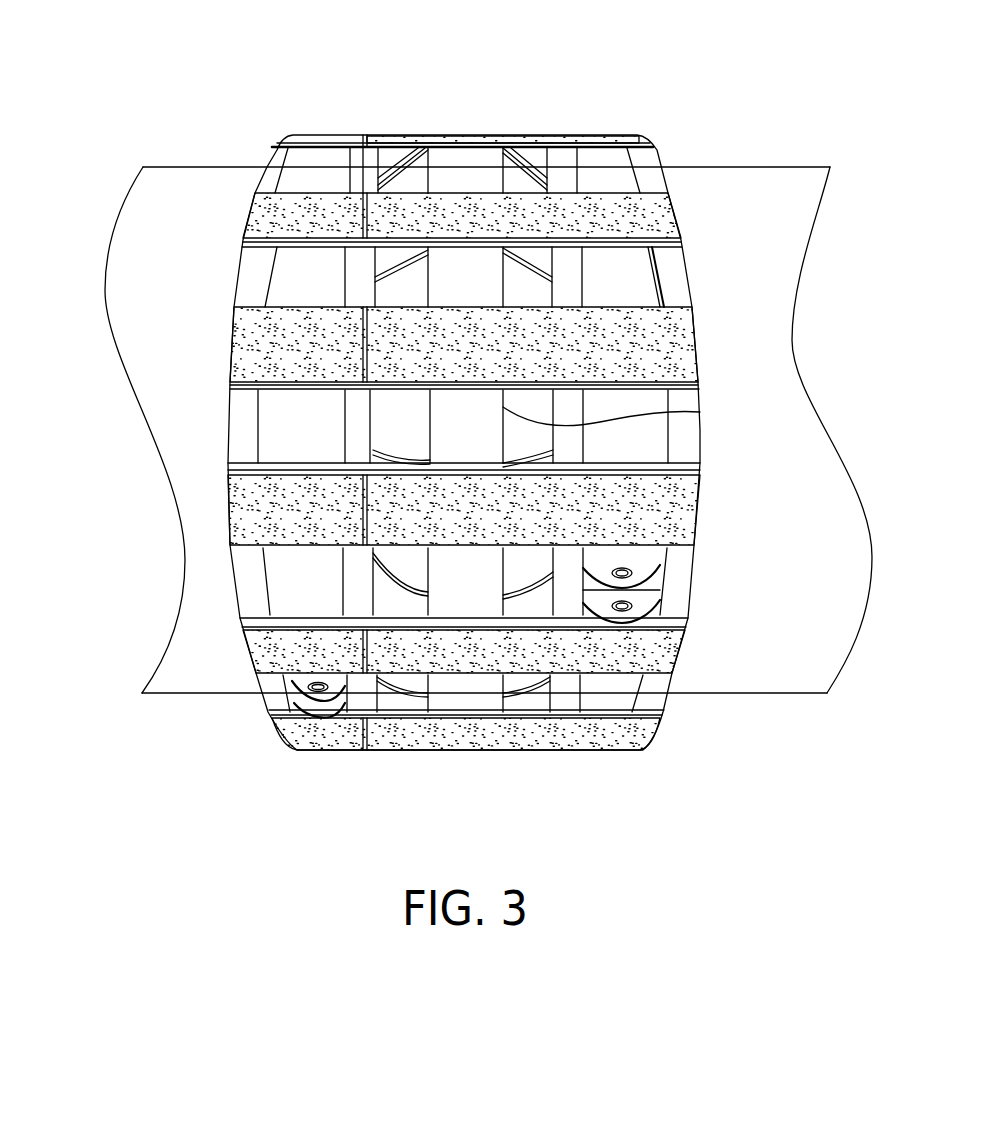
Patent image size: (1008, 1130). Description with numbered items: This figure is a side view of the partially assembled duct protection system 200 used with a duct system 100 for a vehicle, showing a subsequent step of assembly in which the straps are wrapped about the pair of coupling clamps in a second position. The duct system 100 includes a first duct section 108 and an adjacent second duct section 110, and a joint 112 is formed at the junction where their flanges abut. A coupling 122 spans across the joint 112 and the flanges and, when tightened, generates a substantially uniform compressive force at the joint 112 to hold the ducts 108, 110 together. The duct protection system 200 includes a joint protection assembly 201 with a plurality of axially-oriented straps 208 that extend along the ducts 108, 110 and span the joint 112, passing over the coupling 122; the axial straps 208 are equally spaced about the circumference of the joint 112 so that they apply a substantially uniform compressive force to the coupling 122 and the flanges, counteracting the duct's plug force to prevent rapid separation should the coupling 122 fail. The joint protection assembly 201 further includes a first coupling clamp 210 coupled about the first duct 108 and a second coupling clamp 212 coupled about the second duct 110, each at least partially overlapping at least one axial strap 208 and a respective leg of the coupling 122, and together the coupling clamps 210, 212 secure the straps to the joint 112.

The duct system 100 is at (228, 71).
The first duct section 108 is at (157, 264).
The second duct section 110 is at (755, 188).
The joint 112 is at (445, 133).
The coupling 122 is at (700, 412).
The duct protection system 200 is at (548, 127).
The joint protection assembly 201 is at (348, 127).
The axially-oriented straps 208 is at (618, 140).
The first coupling clamp 210 is at (258, 419).
The second coupling clamp 212 is at (678, 280).